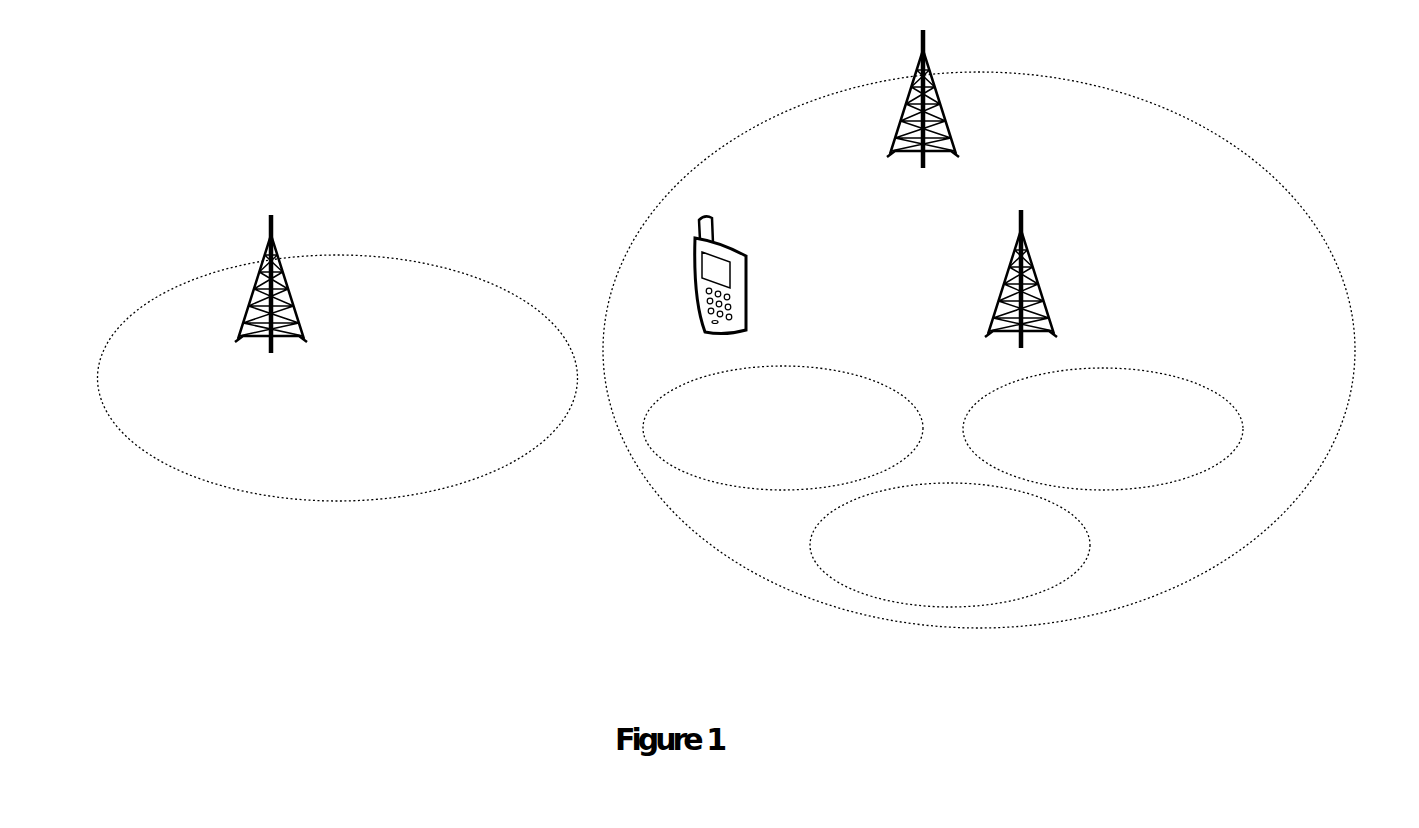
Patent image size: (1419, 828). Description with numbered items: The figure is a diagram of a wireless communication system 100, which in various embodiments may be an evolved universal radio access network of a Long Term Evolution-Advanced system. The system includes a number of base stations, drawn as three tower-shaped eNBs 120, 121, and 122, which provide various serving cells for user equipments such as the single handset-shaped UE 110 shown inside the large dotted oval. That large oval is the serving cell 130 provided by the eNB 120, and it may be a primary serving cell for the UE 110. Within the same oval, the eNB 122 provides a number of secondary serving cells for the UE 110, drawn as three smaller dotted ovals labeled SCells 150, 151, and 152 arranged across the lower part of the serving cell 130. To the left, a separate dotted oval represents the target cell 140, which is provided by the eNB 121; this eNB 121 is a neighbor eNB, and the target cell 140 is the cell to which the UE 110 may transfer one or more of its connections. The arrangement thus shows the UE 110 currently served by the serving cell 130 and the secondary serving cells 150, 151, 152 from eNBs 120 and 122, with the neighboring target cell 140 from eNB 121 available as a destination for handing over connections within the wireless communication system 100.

The wireless communication system 100 is at (420, 108).
The user equipment 110 is at (766, 270).
The eNB 120 is at (938, 54).
The eNB 121 is at (258, 242).
The eNB 122 is at (1044, 243).
The serving cell 130 is at (1182, 113).
The target cell 140 is at (568, 367).
The secondary serving cell 150 is at (658, 435).
The secondary serving cell 151 is at (840, 572).
The secondary serving cell 152 is at (975, 435).